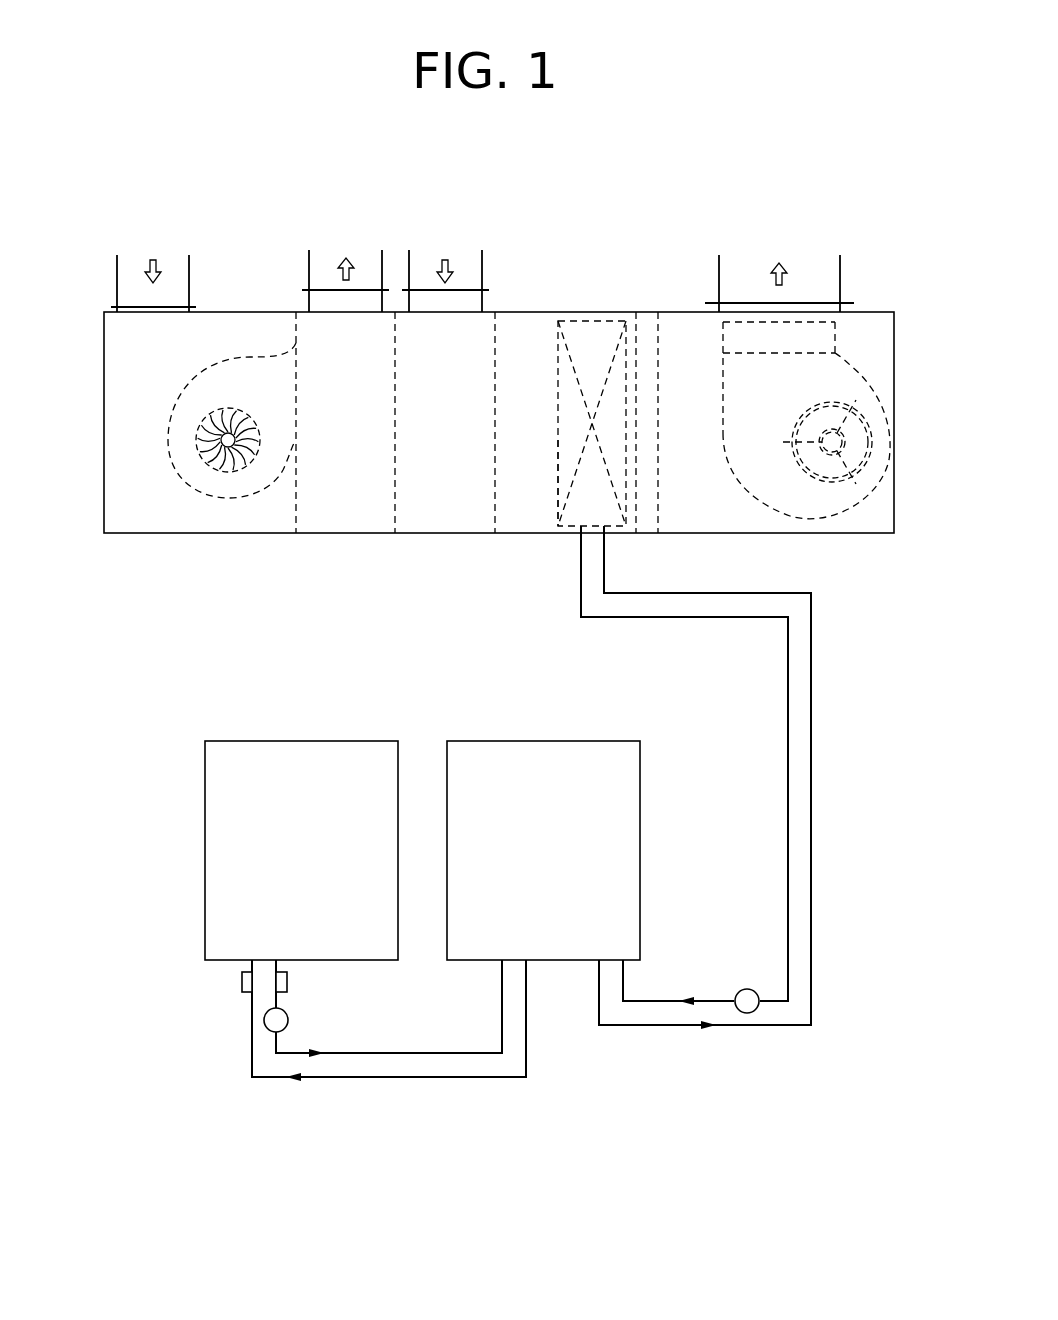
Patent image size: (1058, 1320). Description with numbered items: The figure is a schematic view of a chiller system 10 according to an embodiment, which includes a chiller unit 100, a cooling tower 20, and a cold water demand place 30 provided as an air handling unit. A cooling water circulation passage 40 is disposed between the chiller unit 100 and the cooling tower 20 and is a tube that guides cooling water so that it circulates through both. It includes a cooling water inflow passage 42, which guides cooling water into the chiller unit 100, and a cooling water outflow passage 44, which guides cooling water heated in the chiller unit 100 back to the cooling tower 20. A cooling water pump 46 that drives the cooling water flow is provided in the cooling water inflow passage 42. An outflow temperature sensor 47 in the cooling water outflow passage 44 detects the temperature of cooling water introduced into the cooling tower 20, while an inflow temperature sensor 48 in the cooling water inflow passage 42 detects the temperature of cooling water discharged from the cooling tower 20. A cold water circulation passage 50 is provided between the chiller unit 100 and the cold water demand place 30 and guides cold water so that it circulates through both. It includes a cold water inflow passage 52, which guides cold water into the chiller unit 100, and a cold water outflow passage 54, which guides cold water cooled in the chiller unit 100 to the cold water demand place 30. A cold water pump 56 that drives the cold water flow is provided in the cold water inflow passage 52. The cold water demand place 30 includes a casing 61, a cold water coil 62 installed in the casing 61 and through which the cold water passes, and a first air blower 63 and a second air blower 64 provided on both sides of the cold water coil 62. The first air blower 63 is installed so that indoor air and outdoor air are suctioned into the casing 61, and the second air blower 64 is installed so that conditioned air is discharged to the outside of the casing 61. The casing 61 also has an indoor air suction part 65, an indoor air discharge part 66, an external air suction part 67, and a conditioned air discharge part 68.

The chiller system 10 is at (841, 166).
The cooling tower 20 is at (375, 726).
The cold water demand place 30 is at (261, 556).
The cooling water circulation passage 40 is at (429, 1098).
The cooling water inflow passage 42 is at (413, 1052).
The cooling water outflow passage 44 is at (343, 1078).
The cooling water pump 46 is at (289, 1020).
The outflow temperature sensor 47 is at (241, 982).
The inflow temperature sensor 48 is at (288, 982).
The cold water circulation passage 50 is at (830, 648).
The cold water inflow passage 52 is at (787, 788).
The cold water outflow passage 54 is at (812, 772).
The cold water pump 56 is at (747, 989).
The casing 61 is at (566, 312).
The cold water coil 62 is at (558, 486).
The first air blower 63 is at (180, 413).
The second air blower 64 is at (846, 440).
The indoor air suction part 65 is at (128, 305).
The indoor air discharge part 66 is at (323, 288).
The external air suction part 67 is at (468, 288).
The conditioned air discharge part 68 is at (828, 302).
The chiller unit 100 is at (617, 724).